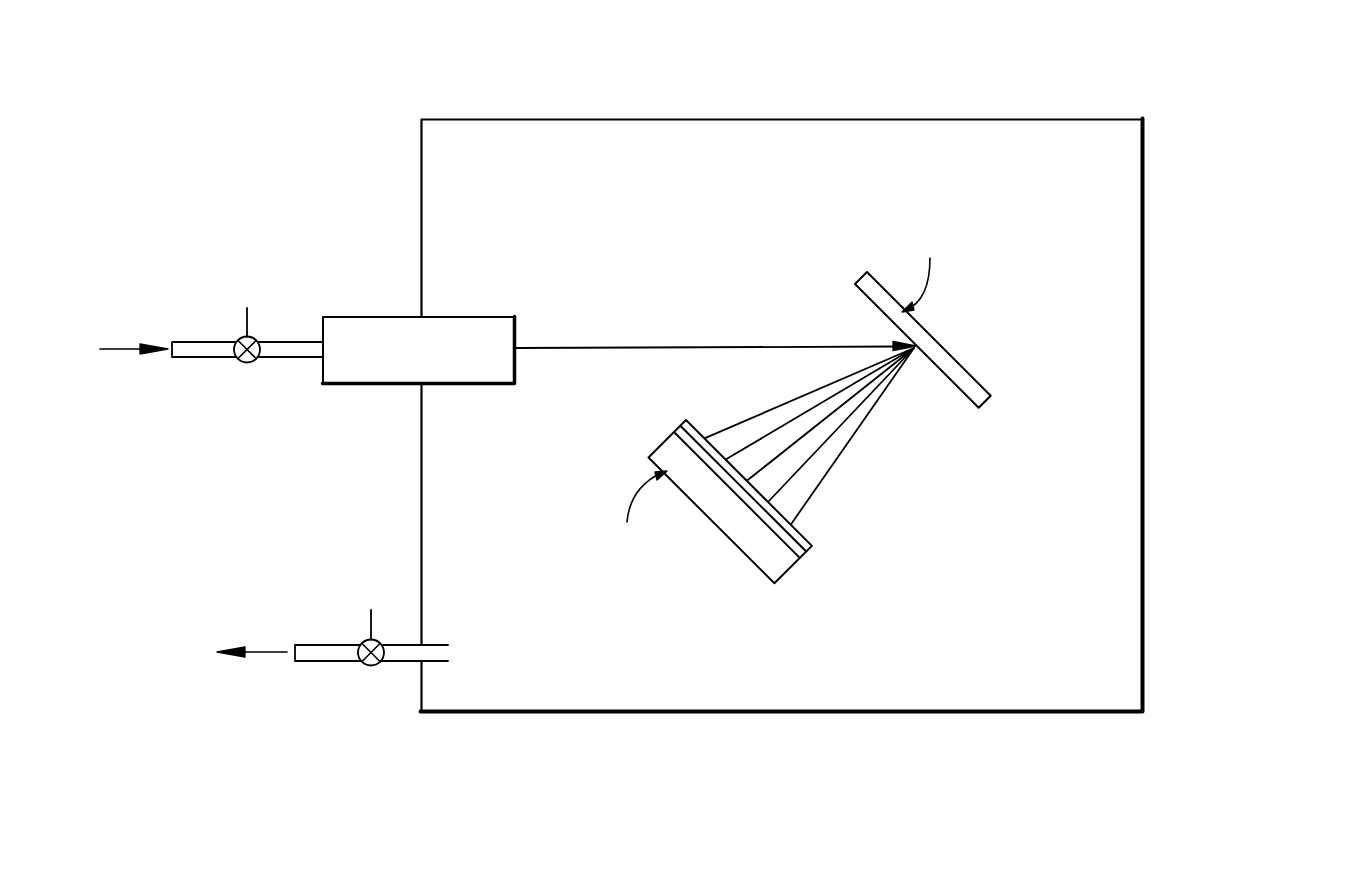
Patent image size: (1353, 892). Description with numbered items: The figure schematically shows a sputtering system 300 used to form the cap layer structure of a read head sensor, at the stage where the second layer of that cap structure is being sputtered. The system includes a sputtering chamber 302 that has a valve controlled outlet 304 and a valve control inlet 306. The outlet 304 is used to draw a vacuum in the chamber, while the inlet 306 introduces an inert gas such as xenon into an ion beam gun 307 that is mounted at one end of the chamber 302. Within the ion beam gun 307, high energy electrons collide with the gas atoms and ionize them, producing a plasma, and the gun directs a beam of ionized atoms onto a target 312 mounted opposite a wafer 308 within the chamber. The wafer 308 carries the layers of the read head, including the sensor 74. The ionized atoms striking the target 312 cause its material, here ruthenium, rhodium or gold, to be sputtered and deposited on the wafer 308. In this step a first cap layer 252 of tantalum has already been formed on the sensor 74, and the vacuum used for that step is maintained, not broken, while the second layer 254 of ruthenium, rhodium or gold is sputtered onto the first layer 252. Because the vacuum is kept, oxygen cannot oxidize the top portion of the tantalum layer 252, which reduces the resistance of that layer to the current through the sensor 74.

The sputtering system 300 is at (1190, 121).
The sputtering chamber 302 is at (1145, 670).
The valve controlled outlet 304 is at (369, 620).
The valve control inlet 306 is at (244, 321).
The ion beam gun 307 is at (470, 384).
The wafer 308 is at (747, 562).
The target 312 is at (955, 358).
The sensor 74 is at (788, 544).
The second layer 254 is at (806, 549).
The first cap layer 252 is at (801, 560).